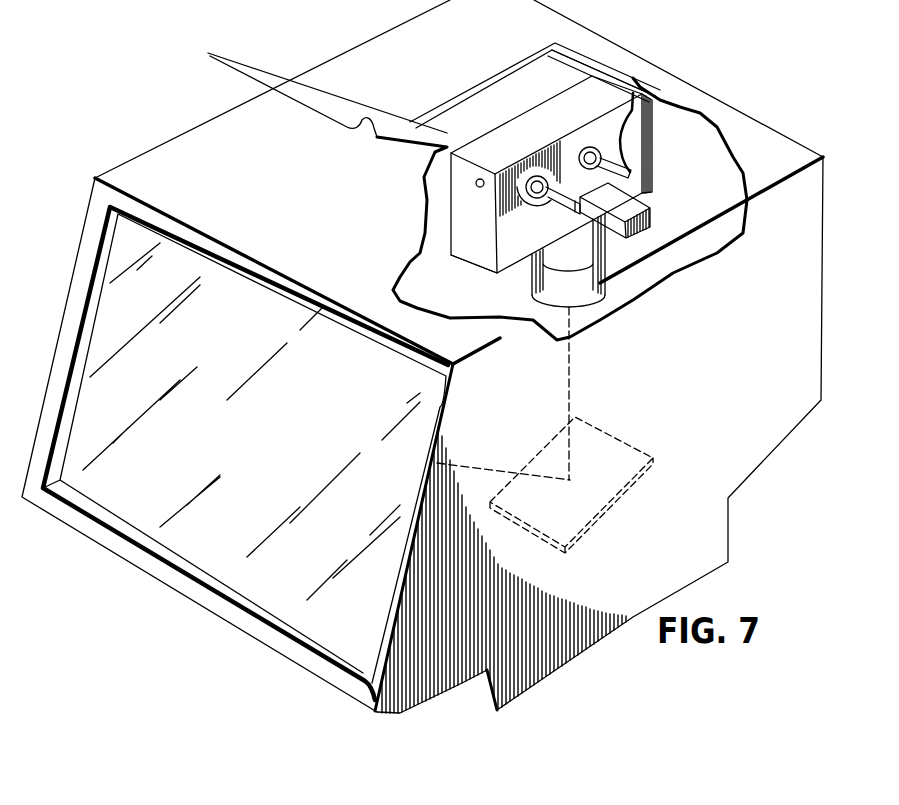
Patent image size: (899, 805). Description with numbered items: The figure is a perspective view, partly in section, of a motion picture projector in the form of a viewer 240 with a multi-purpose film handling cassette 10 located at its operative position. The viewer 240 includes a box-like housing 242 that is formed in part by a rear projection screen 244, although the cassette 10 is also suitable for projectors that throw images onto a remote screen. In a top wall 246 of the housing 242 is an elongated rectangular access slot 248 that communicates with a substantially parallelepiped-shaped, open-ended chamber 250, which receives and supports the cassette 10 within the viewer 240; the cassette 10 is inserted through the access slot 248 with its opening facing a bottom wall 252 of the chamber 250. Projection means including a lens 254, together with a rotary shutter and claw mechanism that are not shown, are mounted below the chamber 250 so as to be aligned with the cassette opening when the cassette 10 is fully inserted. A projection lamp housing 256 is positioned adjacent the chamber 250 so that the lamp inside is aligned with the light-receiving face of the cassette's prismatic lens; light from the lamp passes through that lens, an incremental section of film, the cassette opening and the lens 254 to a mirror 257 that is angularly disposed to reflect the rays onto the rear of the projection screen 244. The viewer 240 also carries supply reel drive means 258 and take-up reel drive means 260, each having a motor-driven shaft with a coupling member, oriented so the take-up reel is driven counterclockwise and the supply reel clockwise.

The viewer 240 is at (185, 113).
The housing 242 is at (95, 177).
The rear projection screen 244 is at (253, 572).
The top wall 246 is at (505, 47).
The access slot 248 is at (600, 75).
The cassette 10 is at (535, 132).
The chamber 250 is at (478, 187).
The bottom wall 252 is at (483, 273).
The lens 254 is at (553, 285).
The projection lamp housing 256 is at (652, 215).
The mirror 257 is at (620, 443).
The supply reel drive means 258 is at (636, 170).
The take-up reel drive means 260 is at (553, 205).